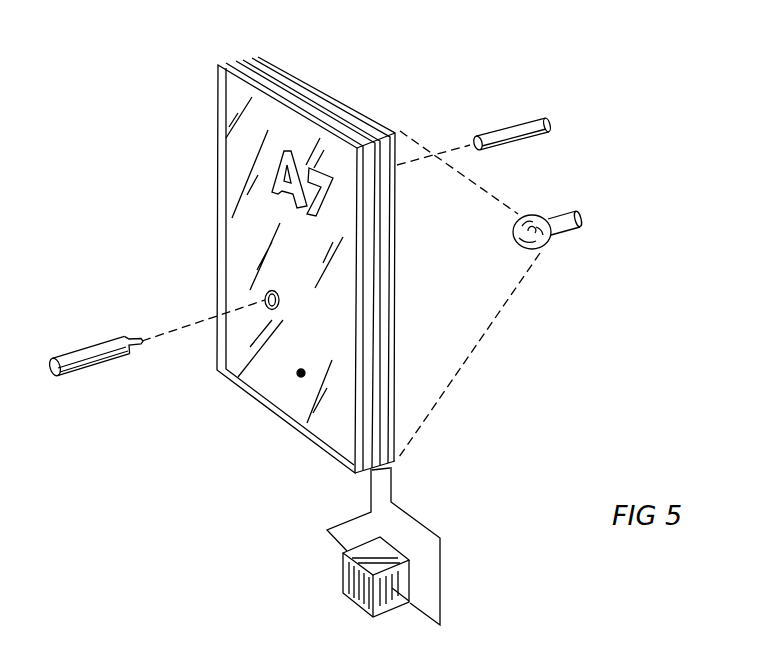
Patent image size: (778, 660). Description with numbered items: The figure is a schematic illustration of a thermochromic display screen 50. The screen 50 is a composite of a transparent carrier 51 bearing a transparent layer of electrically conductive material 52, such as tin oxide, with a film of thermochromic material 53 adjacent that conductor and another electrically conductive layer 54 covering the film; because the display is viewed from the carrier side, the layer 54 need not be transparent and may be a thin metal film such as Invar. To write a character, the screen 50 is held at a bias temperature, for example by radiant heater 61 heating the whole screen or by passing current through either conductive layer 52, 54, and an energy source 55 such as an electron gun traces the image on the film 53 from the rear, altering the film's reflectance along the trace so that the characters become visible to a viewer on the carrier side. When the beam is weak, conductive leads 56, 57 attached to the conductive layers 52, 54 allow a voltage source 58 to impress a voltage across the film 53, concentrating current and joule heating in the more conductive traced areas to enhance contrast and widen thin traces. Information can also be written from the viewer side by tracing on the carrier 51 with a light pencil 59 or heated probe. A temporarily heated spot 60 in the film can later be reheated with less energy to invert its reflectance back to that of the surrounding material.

The display screen 50 is at (175, 198).
The transparent carrier 51 is at (218, 63).
The transparent layer of electrically conductive material 52 is at (233, 62).
The thermochromic film 53 is at (244, 60).
The electrically conductive layer 54 is at (256, 58).
The energy source 55 is at (506, 126).
The conductive lead 56 is at (391, 480).
The conductive lead 57 is at (370, 483).
The voltage source 58 is at (343, 568).
The light pencil 59 is at (76, 349).
The spot 60 is at (300, 378).
The radiant heater 61 is at (550, 243).